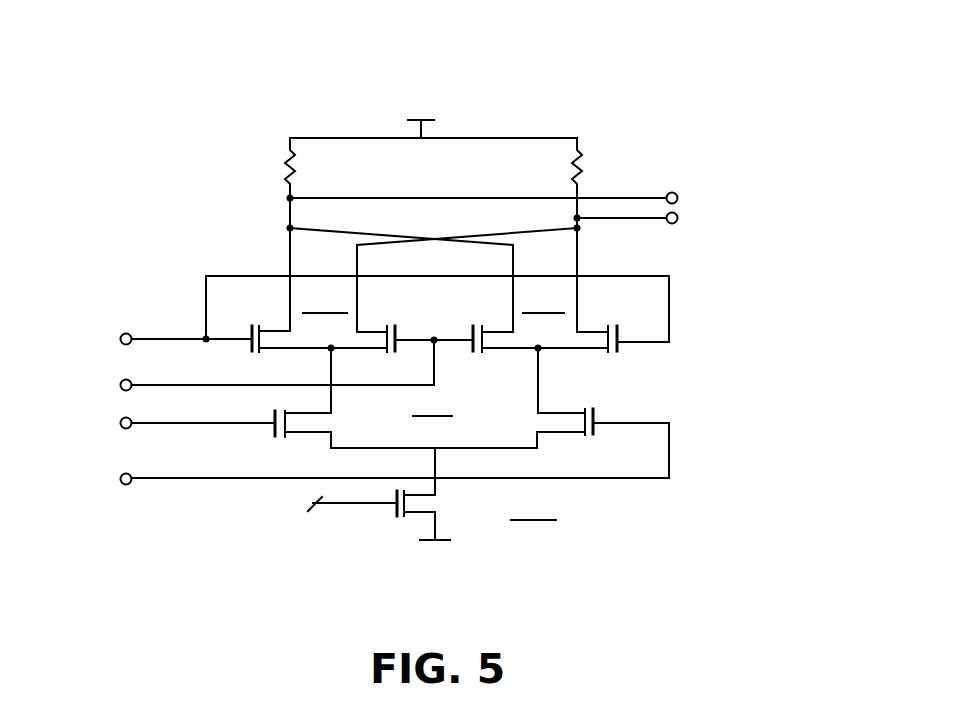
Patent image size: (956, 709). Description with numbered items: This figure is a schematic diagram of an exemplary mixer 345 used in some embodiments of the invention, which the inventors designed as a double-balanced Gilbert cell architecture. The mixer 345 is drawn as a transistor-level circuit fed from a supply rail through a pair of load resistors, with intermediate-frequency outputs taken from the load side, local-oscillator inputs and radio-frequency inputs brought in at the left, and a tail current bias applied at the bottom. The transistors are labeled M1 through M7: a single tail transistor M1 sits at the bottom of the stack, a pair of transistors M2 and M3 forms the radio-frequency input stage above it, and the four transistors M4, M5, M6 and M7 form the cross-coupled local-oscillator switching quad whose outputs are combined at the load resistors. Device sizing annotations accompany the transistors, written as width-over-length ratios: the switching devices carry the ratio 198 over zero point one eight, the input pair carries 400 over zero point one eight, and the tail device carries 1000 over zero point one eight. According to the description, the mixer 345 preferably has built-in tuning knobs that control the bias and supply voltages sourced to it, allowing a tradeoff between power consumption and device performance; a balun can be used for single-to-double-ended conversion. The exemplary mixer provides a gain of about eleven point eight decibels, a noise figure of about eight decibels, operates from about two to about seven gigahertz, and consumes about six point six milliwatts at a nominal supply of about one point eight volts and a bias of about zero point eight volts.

The mixer 345 is at (273, 101).
The tail current transistor M1 is at (395, 515).
The RF input transistor M2 is at (325, 428).
The RF input transistor M3 is at (547, 426).
The LO switching transistor M4 is at (289, 354).
The LO switching transistor M5 is at (382, 324).
The LO switching transistor M6 is at (521, 357).
The LO switching transistor M7 is at (603, 369).
The transistor width/length ratio 198 is at (434, 312).
The transistor width/length ratio 400 is at (433, 418).
The transistor width/length ratio 1000 is at (533, 519).